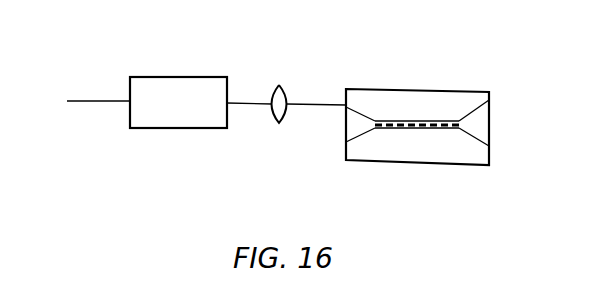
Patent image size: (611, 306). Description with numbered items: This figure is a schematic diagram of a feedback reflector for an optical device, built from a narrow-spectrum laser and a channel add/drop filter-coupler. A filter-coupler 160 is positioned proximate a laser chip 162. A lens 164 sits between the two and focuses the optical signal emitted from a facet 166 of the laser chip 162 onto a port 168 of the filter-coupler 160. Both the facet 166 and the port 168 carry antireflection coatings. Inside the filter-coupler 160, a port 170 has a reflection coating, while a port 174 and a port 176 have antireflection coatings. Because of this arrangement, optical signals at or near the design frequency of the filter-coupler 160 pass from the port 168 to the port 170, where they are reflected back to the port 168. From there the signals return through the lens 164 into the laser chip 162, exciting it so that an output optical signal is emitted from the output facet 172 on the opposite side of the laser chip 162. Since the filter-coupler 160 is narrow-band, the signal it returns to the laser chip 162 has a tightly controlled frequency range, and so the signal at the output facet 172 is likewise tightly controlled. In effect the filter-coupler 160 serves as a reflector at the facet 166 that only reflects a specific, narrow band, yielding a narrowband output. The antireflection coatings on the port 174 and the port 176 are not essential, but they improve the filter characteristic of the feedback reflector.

The filter-coupler 160 is at (423, 89).
The laser chip 162 is at (213, 71).
The lens 164 is at (285, 97).
The facet 166 is at (229, 103).
The port 168 is at (346, 105).
The port 170 is at (489, 146).
The output facet 172 is at (130, 101).
The port 174 is at (489, 99).
The port 176 is at (346, 142).